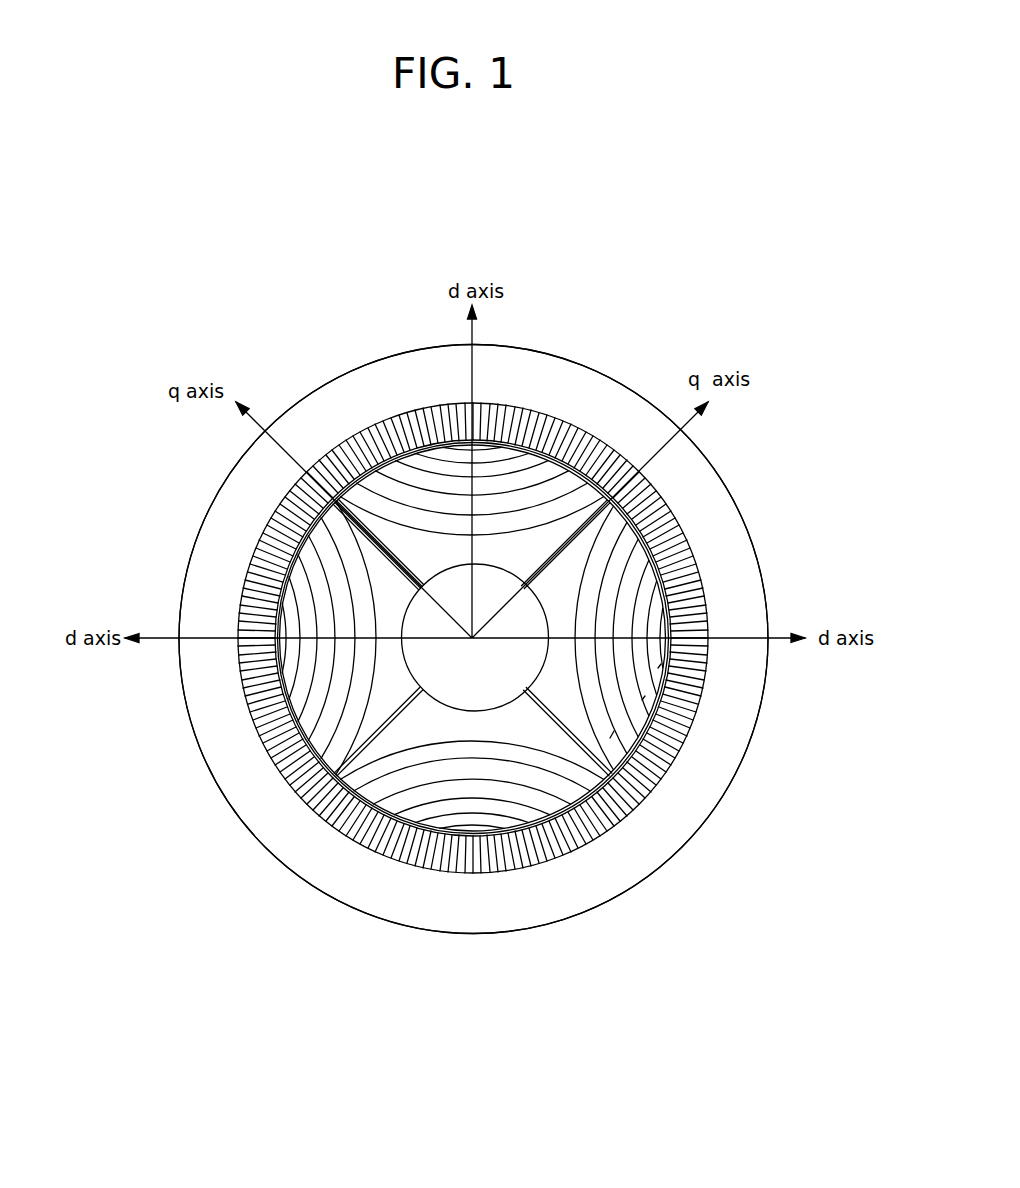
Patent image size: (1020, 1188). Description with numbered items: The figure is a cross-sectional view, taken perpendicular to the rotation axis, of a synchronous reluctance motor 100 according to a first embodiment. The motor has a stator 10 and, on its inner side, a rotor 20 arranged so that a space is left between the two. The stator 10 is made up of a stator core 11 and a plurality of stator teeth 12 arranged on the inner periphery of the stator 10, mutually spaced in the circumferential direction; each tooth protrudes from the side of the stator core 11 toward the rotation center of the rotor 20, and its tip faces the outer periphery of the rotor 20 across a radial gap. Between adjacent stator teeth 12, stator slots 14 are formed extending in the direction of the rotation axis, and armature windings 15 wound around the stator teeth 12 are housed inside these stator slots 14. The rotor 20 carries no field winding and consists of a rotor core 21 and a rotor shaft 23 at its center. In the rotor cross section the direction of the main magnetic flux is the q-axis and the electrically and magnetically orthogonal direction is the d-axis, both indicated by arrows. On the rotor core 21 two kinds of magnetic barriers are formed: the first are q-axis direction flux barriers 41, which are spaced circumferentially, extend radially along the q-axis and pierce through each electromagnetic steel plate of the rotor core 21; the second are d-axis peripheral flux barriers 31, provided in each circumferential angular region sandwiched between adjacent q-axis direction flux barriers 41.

The synchronous reluctance motor 100 is at (642, 318).
The stator 10 is at (448, 627).
The stator core 11 is at (190, 548).
The stator teeth 12 is at (307, 477).
The stator slots 14 is at (337, 455).
The armature windings 15 is at (398, 420).
The rotor 20 is at (485, 722).
The rotor core 21 is at (567, 588).
The rotor shaft 23 is at (420, 658).
The d-axis peripheral flux barriers 31 is at (610, 738).
The q-axis direction flux barriers 41 is at (403, 718).